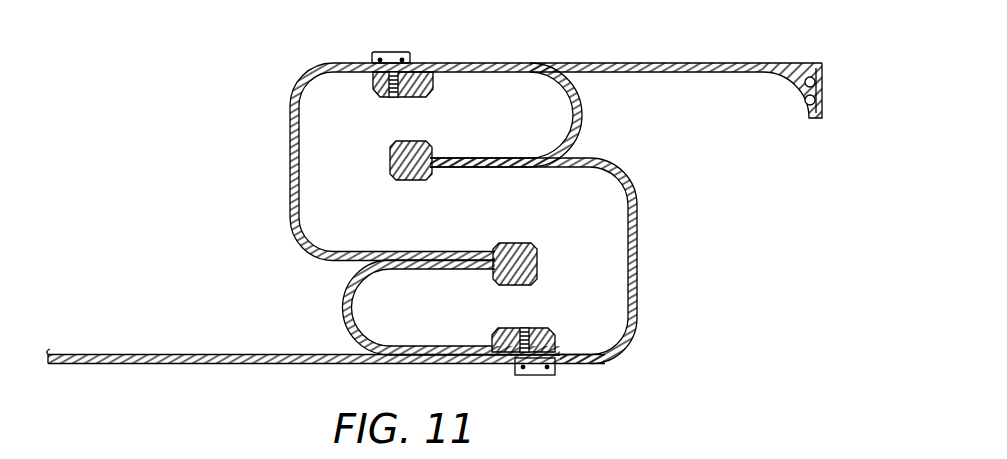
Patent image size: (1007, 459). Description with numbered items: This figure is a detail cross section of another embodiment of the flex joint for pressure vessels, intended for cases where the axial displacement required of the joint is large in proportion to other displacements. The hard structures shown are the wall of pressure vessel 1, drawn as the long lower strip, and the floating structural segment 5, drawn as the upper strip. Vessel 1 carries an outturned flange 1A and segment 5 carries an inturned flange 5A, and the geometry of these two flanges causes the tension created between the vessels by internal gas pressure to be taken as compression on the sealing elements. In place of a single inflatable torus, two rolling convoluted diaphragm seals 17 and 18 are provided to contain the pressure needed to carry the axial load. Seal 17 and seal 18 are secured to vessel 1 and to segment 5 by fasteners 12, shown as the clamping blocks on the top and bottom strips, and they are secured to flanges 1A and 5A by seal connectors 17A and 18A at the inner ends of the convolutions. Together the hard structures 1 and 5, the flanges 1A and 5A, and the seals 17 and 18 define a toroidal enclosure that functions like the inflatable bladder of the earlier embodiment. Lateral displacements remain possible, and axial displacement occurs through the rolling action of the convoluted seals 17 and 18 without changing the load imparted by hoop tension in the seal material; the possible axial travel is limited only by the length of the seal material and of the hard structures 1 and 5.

The pressure vessel 1 is at (187, 354).
The outturned flange 1A is at (640, 247).
The floating structural segment 5 is at (687, 62).
The inturned flange 5A is at (290, 145).
The fasteners 12 is at (403, 52).
The rolling convoluted diaphragm seal 17 is at (585, 108).
The seal connector 17A is at (395, 150).
The rolling convoluted diaphragm seal 18 is at (342, 300).
The seal connector 18A is at (540, 265).